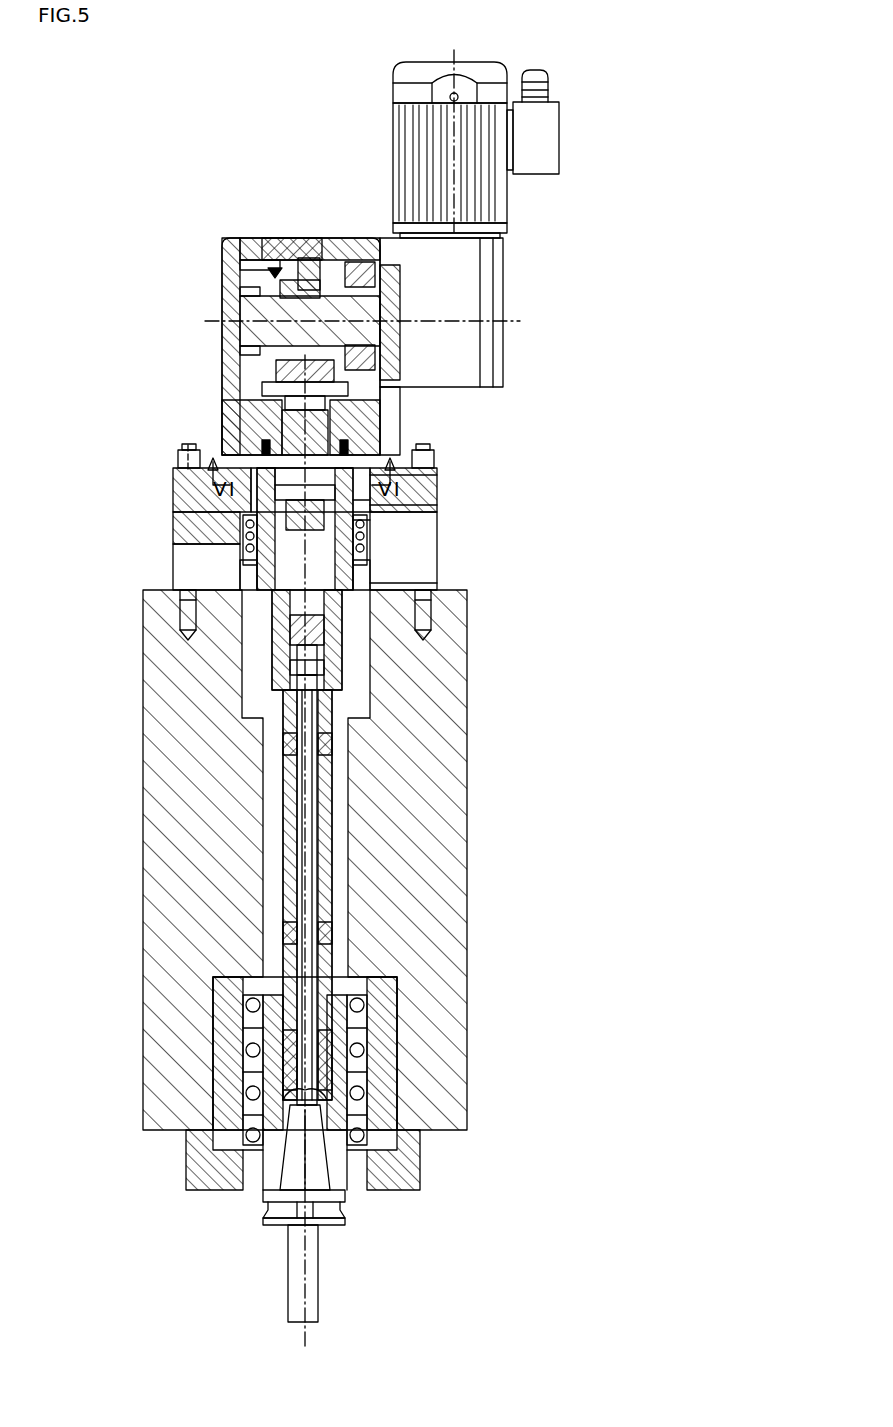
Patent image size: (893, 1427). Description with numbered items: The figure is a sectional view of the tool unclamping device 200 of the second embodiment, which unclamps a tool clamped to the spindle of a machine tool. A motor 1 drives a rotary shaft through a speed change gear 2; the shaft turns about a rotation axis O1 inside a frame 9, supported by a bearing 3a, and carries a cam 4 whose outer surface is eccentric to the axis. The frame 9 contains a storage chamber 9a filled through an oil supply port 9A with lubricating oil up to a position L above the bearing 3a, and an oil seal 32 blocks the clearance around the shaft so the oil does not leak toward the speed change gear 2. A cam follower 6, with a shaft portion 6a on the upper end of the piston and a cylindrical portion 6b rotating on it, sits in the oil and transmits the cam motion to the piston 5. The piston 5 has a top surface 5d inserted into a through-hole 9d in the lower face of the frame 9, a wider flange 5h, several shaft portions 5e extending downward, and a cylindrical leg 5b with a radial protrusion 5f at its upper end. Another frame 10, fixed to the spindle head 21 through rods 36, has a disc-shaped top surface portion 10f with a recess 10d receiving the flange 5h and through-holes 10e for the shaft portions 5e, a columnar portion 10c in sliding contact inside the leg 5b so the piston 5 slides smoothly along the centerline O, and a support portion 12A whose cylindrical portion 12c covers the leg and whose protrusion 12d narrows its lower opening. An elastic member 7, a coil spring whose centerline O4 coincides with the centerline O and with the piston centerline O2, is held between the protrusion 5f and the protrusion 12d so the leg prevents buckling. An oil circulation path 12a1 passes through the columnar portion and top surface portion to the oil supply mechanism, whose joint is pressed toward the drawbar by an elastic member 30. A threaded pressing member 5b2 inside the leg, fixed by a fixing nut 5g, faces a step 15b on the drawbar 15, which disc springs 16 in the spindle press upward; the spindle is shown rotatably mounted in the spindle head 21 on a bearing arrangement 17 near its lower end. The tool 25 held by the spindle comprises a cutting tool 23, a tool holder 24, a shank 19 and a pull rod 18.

The tool unclamping device 200 is at (328, 96).
The motor 1 is at (470, 197).
The speed change gear 2 is at (468, 355).
The bearing 3a is at (350, 238).
The cam 4 is at (307, 238).
The oil level position L is at (330, 238).
The oil seal 32 is at (364, 238).
The frame 9 is at (238, 262).
The oil supply port 9A is at (285, 238).
The storage chamber 9a is at (271, 238).
The through-hole 9d is at (383, 400).
The rotation axis O1 is at (228, 321).
The centerline of piston O2 is at (300, 418).
The centerline of elastic member O4 is at (180, 600).
The centerline O is at (310, 825).
The cam follower 6 is at (124, 346).
The shaft portion 6a is at (262, 392).
The cylindrical portion 6b is at (276, 366).
The elastic member 30 is at (282, 435).
The recess 10d is at (262, 447).
The frame 10 is at (195, 488).
The columnar portion 10c is at (362, 585).
The through-hole 10e is at (395, 510).
The top surface portion 10f is at (420, 492).
The oil circulation path 12a1 is at (190, 502).
The support portion 12A is at (114, 533).
The cylindrical portion 12c is at (245, 550).
The protrusion 12d is at (245, 575).
The elastic member 7 is at (245, 528).
The piston 5 is at (372, 418).
The leg 5b is at (350, 608).
The pressing member 5b2 is at (340, 662).
The top surface 5d is at (372, 442).
The shaft portions 5e is at (400, 513).
The protrusion 5f is at (395, 530).
The fixing nut 5g is at (350, 632).
The flange 5h is at (436, 468).
The rods 36 is at (422, 567).
The drawbar 15 is at (312, 722).
The step 15b is at (280, 684).
The disc springs 16 is at (325, 885).
The bearing unit 17 is at (362, 1030).
The pull rod 18 is at (318, 1098).
The shank 19 is at (320, 1165).
The spindle head 21 is at (440, 762).
The tool 23 is at (312, 1242).
The tool holder 24 is at (335, 1202).
The tool 25 is at (538, 1105).